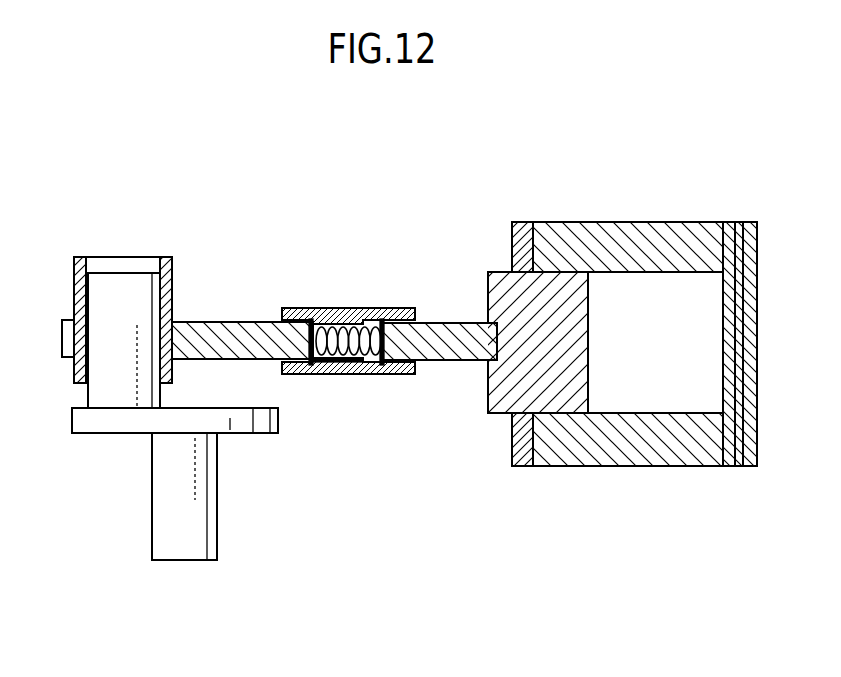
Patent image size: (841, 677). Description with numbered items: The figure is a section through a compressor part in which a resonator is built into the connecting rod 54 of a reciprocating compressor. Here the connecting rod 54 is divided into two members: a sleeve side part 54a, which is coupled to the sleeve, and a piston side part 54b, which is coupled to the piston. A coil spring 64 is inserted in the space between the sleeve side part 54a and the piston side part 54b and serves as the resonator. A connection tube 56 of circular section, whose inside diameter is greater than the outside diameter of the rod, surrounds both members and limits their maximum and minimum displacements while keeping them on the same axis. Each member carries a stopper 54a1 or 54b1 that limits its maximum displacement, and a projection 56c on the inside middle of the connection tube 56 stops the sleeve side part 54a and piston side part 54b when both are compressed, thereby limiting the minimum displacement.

The connecting rod 54 is at (334, 282).
The sleeve side part 54a is at (243, 332).
The piston side part 54b is at (440, 305).
The stopper 54a1 is at (309, 366).
The stopper 54b1 is at (386, 366).
The connection tube 56 is at (380, 374).
The projection 56c is at (350, 374).
The coil spring 64 is at (312, 374).